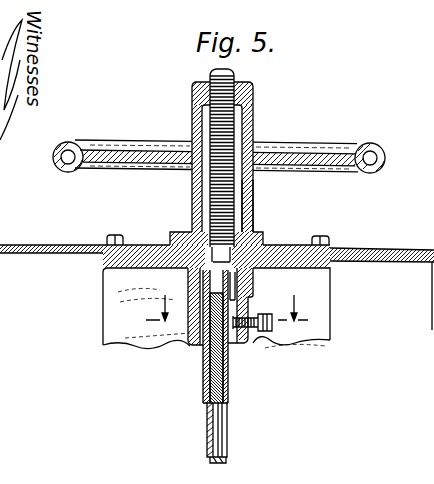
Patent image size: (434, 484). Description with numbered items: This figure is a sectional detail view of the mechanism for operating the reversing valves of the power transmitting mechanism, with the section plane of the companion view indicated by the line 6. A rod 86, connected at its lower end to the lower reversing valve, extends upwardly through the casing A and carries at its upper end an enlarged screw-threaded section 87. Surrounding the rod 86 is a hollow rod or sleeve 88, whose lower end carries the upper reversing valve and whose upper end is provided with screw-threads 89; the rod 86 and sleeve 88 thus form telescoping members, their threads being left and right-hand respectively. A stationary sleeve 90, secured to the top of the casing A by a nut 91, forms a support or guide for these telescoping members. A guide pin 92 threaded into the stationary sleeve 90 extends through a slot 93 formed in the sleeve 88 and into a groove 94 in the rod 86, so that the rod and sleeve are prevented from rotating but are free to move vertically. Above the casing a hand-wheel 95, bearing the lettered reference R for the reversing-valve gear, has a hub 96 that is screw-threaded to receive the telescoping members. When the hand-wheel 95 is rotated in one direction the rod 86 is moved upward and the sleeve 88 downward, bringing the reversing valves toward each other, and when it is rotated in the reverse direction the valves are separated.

The enlarged screw-threaded section 87 is at (238, 75).
The hub 96 is at (192, 124).
The hand lever bar R is at (205, 135).
The hand-wheel 95 is at (356, 146).
The screw-threads 89 is at (256, 212).
The nut 91 is at (264, 241).
The casing A is at (418, 229).
The slot 93 is at (246, 296).
The stationary sleeve 90 is at (249, 302).
The guide pin 92 is at (262, 332).
The groove 94 is at (230, 382).
The hollow rod or sleeve 88 is at (229, 421).
The rod 86 is at (226, 459).
The section line 6- 6 is at (227, 313).